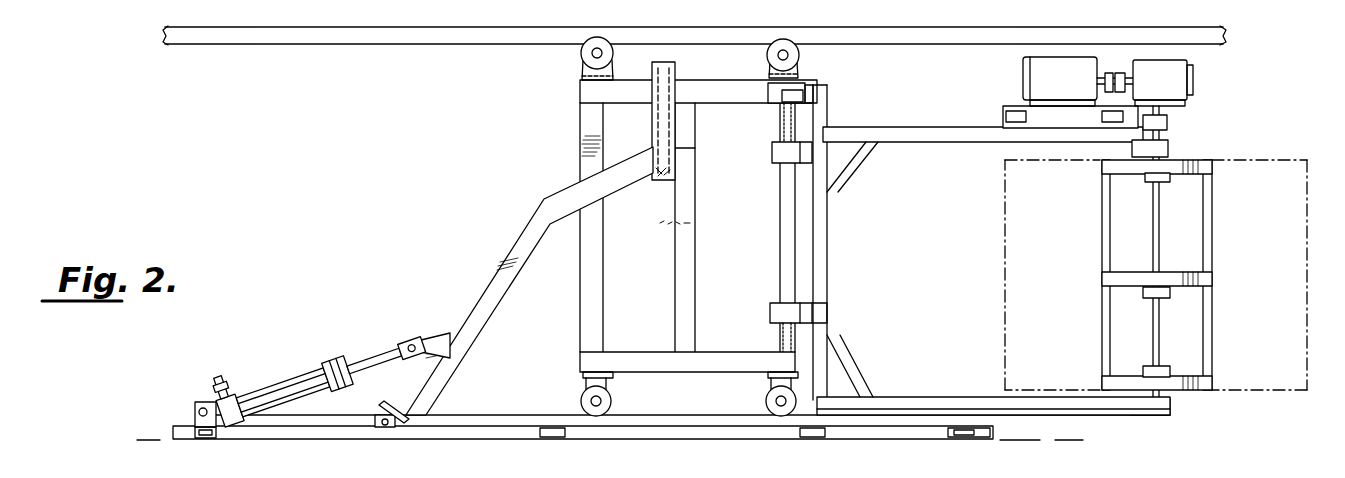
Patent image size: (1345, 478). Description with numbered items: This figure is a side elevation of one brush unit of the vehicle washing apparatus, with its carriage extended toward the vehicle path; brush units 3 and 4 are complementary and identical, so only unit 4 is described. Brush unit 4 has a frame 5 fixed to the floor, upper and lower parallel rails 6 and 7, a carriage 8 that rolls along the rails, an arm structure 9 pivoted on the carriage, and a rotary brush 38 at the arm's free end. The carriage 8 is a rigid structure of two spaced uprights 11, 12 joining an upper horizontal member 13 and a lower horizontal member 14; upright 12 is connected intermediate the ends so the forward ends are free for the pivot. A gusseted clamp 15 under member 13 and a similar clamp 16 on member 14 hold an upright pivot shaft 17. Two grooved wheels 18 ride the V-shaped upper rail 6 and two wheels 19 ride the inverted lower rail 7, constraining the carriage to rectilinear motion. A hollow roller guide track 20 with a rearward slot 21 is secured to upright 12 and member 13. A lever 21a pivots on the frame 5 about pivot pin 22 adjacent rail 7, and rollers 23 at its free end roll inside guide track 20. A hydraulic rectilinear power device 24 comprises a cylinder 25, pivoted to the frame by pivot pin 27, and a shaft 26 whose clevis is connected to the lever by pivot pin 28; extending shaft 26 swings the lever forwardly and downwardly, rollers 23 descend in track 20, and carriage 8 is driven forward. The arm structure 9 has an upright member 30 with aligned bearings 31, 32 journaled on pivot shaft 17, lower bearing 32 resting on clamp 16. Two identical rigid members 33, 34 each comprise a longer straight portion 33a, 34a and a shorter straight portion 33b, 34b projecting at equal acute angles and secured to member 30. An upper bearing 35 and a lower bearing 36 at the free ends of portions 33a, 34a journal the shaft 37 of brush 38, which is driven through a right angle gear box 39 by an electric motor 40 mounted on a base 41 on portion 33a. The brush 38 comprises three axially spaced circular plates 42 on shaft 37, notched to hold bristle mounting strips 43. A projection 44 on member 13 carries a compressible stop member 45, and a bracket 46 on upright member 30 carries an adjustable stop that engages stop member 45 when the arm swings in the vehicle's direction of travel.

The brush unit 3 is at (546, 161).
The brush unit 4 is at (478, 477).
The frame 5 is at (685, 439).
The upper rail 6 is at (396, 46).
The lower rail 7 is at (513, 424).
The carriage 8 is at (576, 125).
The arm structure 9 is at (905, 128).
The upright 11 is at (598, 241).
The upright 12 is at (690, 224).
The upper horizontal member 13 is at (706, 97).
The lower horizontal member 14 is at (716, 352).
The gusseted clamp 15 is at (777, 118).
The clamp 16 is at (779, 340).
The pivot shaft 17 is at (787, 193).
The wheels 18 is at (581, 52).
The wheels 19 is at (611, 399).
The roller guide track 20 is at (660, 75).
The slot 21 is at (656, 111).
The lever 21a is at (497, 283).
The pivot pin 22 is at (383, 415).
The rollers 23 is at (658, 183).
The hydraulic rectilinear power device 24 is at (247, 377).
The cylinder 25 is at (277, 377).
The shaft 26 is at (388, 349).
The pivot pin 27 is at (202, 405).
The pivot pin 28 is at (413, 341).
The upright member 30 is at (822, 224).
The bearing 31 is at (771, 152).
The lower bearing 32 is at (776, 303).
The rigid member 33 is at (918, 129).
The longer straight portion 33a is at (968, 128).
The shorter straight portion 33b is at (855, 127).
The rigid member 34 is at (959, 394).
The longer straight portion 34a is at (1117, 413).
The shorter straight portion 34b is at (866, 399).
The upper bearing 35 is at (1168, 133).
The lower bearing 36 is at (1172, 407).
The shaft 37 is at (1162, 178).
The rotary brush 38 is at (1004, 228).
The right angle gear box 39 is at (1185, 70).
The electric motor 40 is at (1030, 80).
The base 41 is at (1010, 108).
The circular plates 42 is at (1143, 175).
The bristle mounting strips 43 is at (1214, 195).
The projection 44 is at (772, 96).
The stop member 45 is at (798, 92).
The bracket 46 is at (824, 101).